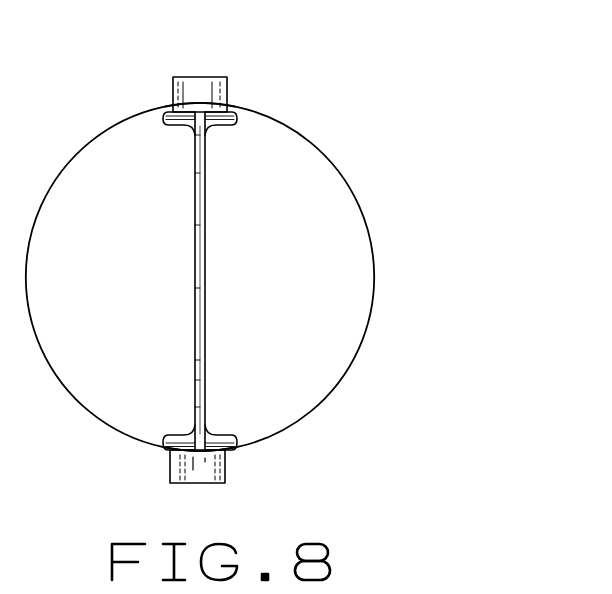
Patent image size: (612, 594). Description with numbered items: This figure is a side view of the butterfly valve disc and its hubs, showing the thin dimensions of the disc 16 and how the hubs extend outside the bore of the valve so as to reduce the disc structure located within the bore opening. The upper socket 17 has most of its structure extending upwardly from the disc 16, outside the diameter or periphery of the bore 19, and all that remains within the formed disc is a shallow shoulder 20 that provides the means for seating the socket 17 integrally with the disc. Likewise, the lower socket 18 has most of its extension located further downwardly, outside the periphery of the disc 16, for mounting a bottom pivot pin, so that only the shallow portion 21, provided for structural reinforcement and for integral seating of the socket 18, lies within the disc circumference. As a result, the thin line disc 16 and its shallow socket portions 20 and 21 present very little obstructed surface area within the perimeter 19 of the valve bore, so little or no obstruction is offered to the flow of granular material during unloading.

The disc 16 is at (205, 328).
The upper socket 17 is at (229, 94).
The lower socket 18 is at (200, 485).
The bore 19 is at (368, 228).
The shallow shoulder 20 is at (177, 126).
The socket portion 21 is at (210, 440).